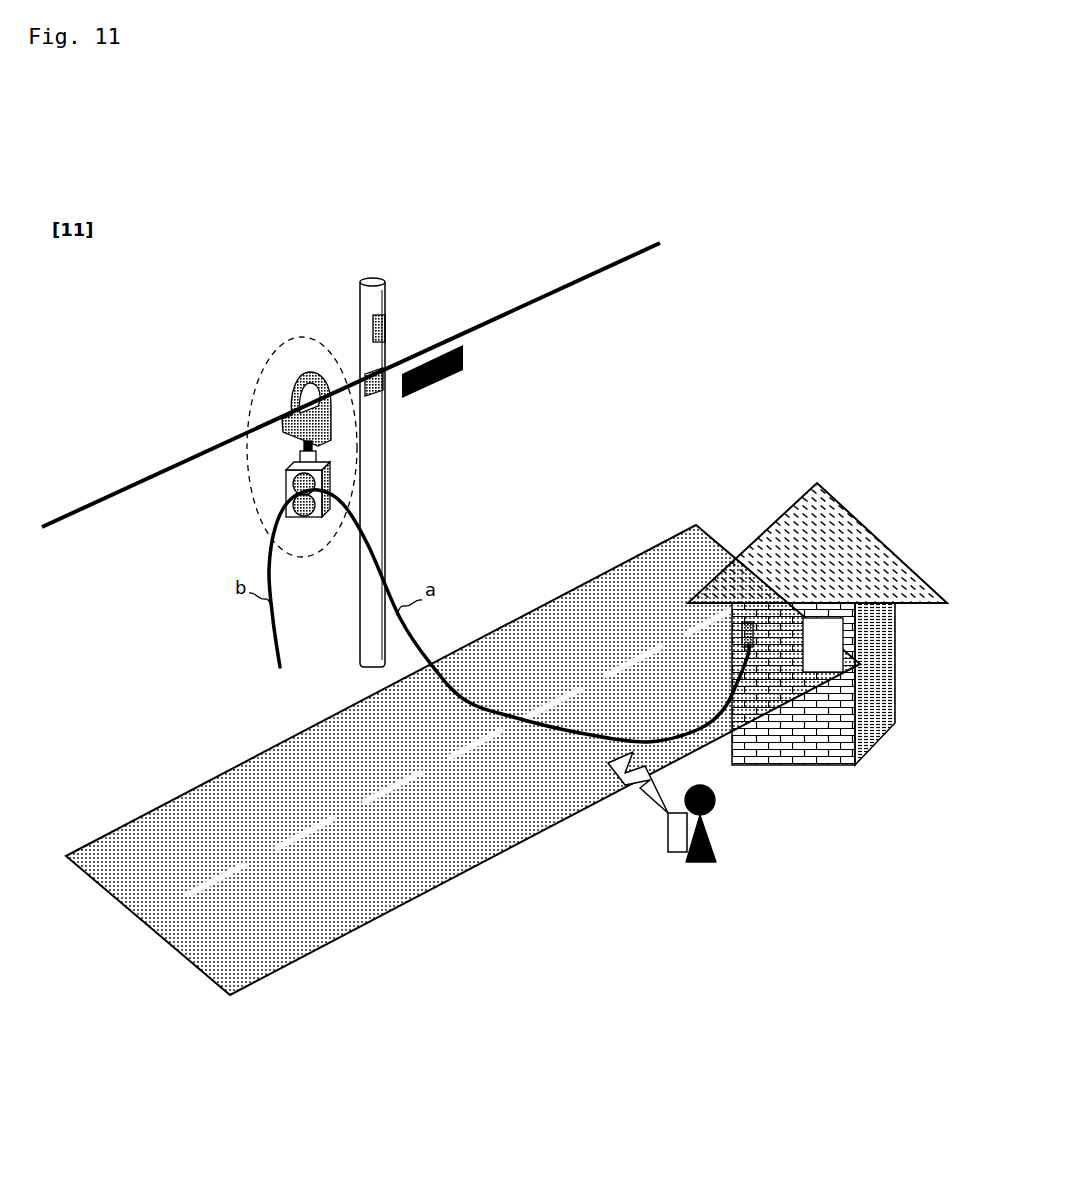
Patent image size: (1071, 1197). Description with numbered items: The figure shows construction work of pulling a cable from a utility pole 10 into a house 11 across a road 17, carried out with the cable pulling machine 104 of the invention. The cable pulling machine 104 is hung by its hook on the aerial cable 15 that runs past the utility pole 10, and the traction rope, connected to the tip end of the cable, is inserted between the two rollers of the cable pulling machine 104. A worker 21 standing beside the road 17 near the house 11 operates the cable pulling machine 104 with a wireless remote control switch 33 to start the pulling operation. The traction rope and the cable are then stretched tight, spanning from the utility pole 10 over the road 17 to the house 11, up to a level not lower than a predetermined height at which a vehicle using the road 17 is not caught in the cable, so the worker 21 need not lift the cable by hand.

The utility pole 10 is at (372, 281).
The house 11 is at (826, 503).
The aerial cable 15 is at (101, 497).
The road 17 is at (118, 822).
The worker 21 is at (715, 832).
The wireless remote control switch 33 is at (679, 852).
The cable pulling machine 104 is at (262, 376).